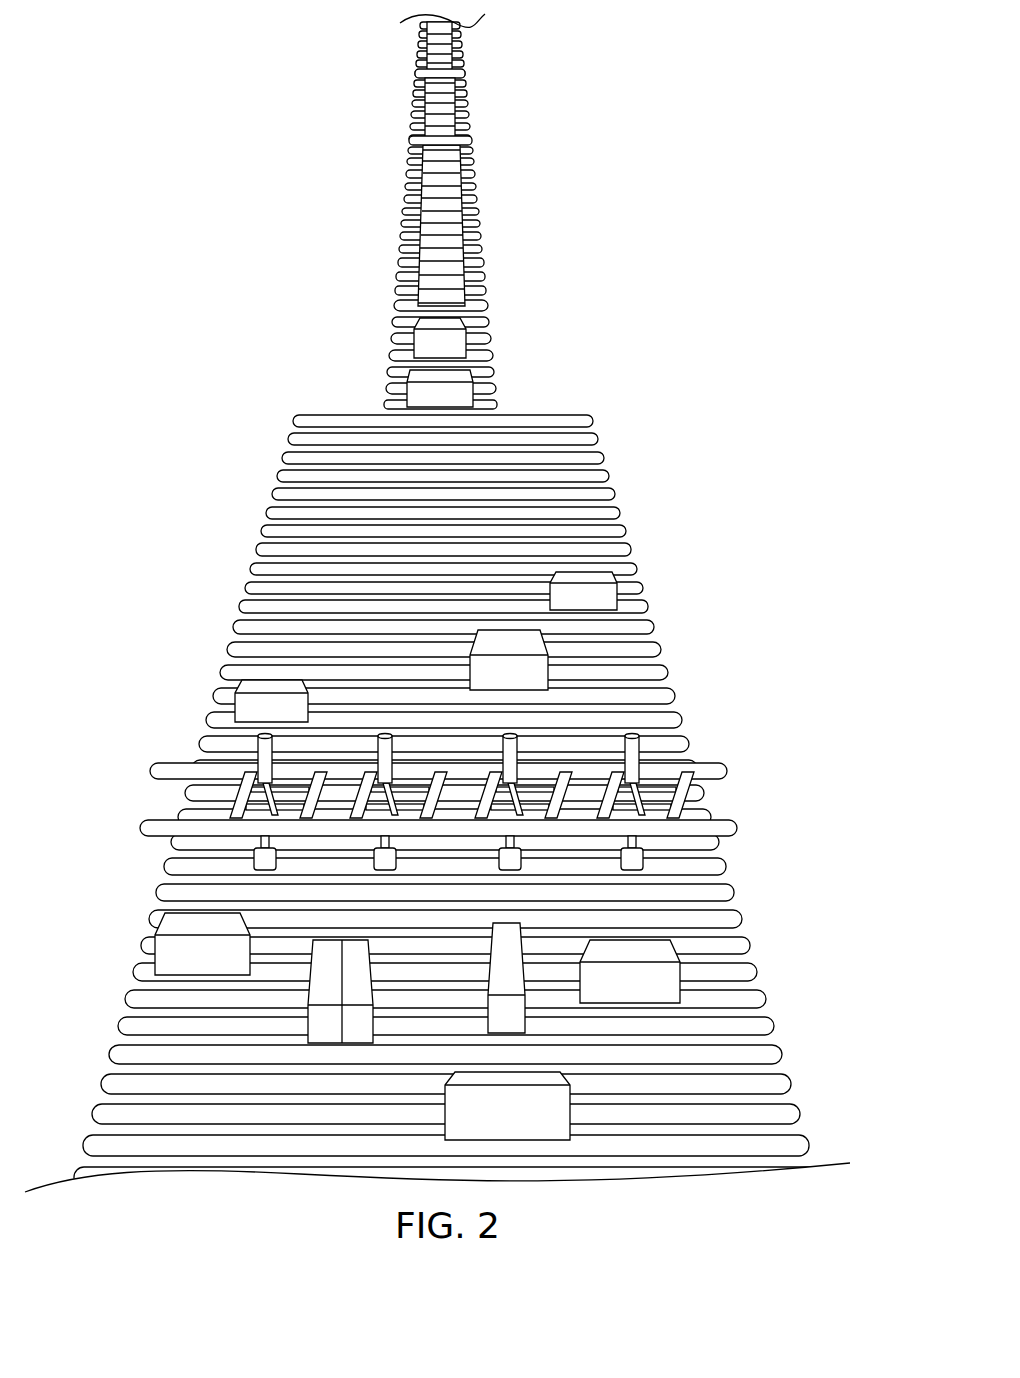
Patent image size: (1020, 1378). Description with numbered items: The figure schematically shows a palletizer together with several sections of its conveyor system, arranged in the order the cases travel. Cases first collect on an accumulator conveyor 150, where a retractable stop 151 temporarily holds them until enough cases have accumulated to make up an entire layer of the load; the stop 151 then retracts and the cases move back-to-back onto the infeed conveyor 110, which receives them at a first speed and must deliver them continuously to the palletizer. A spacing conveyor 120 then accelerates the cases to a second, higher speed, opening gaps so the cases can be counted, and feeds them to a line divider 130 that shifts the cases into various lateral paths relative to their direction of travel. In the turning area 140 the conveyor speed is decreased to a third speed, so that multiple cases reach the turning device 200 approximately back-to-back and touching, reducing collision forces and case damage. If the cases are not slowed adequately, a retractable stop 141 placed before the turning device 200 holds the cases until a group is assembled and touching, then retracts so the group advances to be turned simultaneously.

The infeed conveyor 110 is at (508, 225).
The spacing conveyor 120 is at (513, 363).
The line divider 130 is at (653, 512).
The turning area 140 is at (165, 757).
The retractable stop 141 is at (526, 692).
The accumulator conveyor 150 is at (512, 84).
The retractable stop 151 is at (452, 141).
The turning device 200 is at (245, 840).